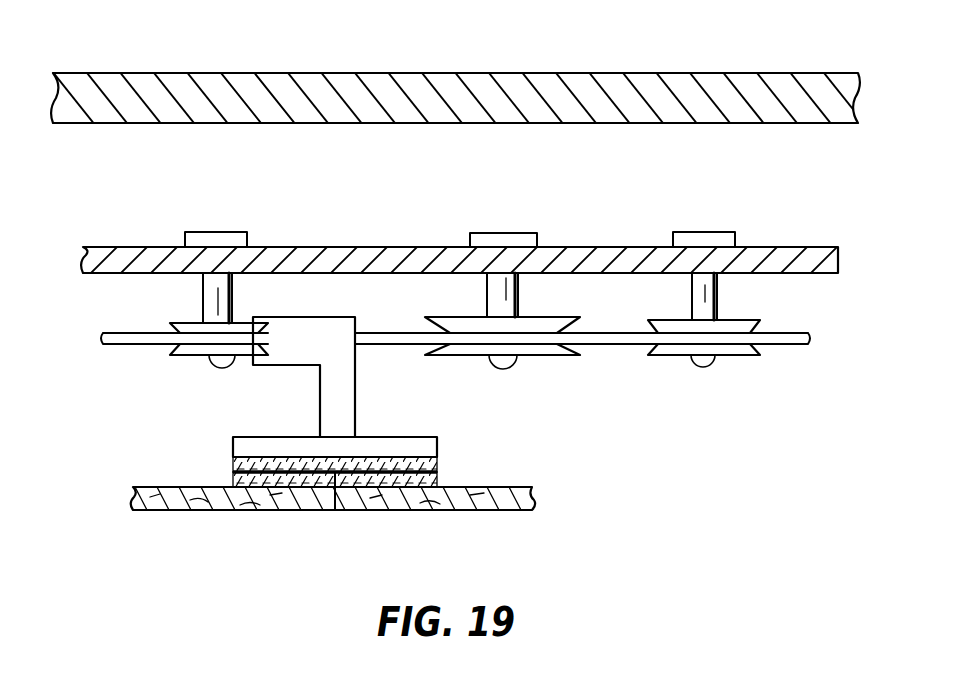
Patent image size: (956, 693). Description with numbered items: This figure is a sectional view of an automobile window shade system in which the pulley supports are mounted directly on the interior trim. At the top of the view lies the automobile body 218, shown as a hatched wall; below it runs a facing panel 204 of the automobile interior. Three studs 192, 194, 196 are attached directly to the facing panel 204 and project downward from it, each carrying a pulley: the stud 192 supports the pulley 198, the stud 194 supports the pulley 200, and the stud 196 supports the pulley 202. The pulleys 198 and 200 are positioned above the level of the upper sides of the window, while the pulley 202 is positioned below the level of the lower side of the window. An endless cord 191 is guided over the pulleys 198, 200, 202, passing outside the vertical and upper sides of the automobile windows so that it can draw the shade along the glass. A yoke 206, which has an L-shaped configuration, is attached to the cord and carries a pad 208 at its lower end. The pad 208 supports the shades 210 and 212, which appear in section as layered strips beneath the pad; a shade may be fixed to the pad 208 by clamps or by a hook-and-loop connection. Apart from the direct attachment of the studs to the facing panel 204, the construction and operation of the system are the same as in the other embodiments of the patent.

The automobile body 218 is at (377, 82).
The facing panel 204 is at (758, 253).
The stud 192 is at (197, 341).
The stud 196 is at (506, 339).
The stud 194 is at (725, 336).
The endless cord 191 is at (123, 344).
The pulley 198 is at (242, 355).
The pulley 202 is at (543, 350).
The pulley 200 is at (732, 349).
The yoke 206 is at (330, 395).
The pad 208 is at (363, 447).
The shade 210 is at (333, 523).
The shade 212 is at (487, 500).